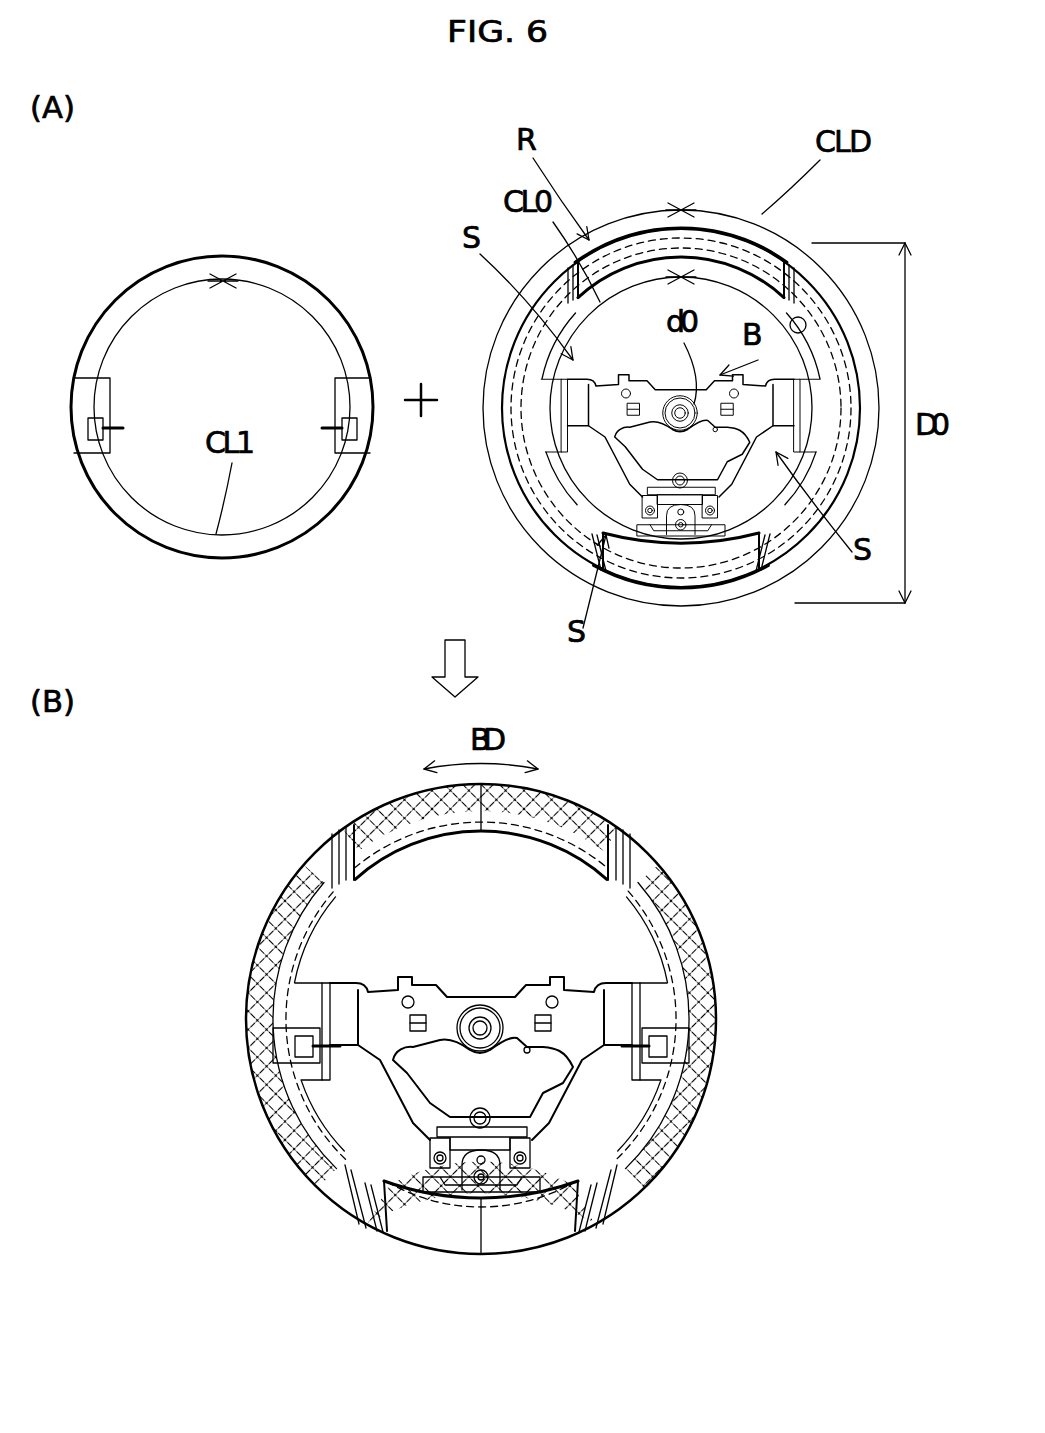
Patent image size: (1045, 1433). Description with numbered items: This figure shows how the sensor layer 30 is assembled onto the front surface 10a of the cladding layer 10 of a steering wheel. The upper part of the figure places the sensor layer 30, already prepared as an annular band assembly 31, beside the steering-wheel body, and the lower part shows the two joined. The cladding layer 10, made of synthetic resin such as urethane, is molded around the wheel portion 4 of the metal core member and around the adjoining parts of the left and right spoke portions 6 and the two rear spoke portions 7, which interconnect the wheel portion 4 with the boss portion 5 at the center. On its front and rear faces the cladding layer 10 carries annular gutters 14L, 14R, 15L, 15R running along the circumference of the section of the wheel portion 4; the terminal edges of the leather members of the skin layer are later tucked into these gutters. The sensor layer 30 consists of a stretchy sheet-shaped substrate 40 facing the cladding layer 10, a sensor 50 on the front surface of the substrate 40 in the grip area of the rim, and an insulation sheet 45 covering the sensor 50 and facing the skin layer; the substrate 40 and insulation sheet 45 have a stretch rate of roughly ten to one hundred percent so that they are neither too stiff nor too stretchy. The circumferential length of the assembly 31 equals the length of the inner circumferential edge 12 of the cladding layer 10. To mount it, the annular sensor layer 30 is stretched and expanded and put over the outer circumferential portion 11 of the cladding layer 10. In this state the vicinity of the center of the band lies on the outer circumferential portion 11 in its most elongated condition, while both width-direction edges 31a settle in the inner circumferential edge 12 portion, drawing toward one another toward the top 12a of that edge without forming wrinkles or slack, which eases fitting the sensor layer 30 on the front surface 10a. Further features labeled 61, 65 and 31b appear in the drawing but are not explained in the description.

The sensor layer 30 is at (257, 228).
The assembly 31 is at (250, 1140).
The attachment block of ring 61 is at (100, 450).
The connecting bar 65 is at (122, 425).
The cladding layer 10 is at (506, 466).
The front surface of the cladding layer 10a is at (712, 229).
The outer circumferential portion of the cladding layer 11 is at (500, 415).
The inner circumferential edge of the cladding layer 12 is at (806, 329).
The top of the inner circumferential edge portion 12a is at (530, 840).
The wheel portion 4 is at (625, 257).
The boss portion 5 is at (703, 530).
The spoke portions 6 is at (518, 398).
The spoke portions 7 is at (620, 491).
The annular gutter 14L is at (340, 825).
The annular gutter 14R is at (617, 825).
The annular gutter 15L is at (375, 1223).
The annular gutter 15R is at (587, 1223).
The edges of the assembly 31a is at (430, 840).
The outer cover portion (hatched) 31b is at (275, 895).
The substrate 40 is at (258, 995).
The insulation sheet 45 is at (258, 1028).
The sensor 50 is at (253, 1065).